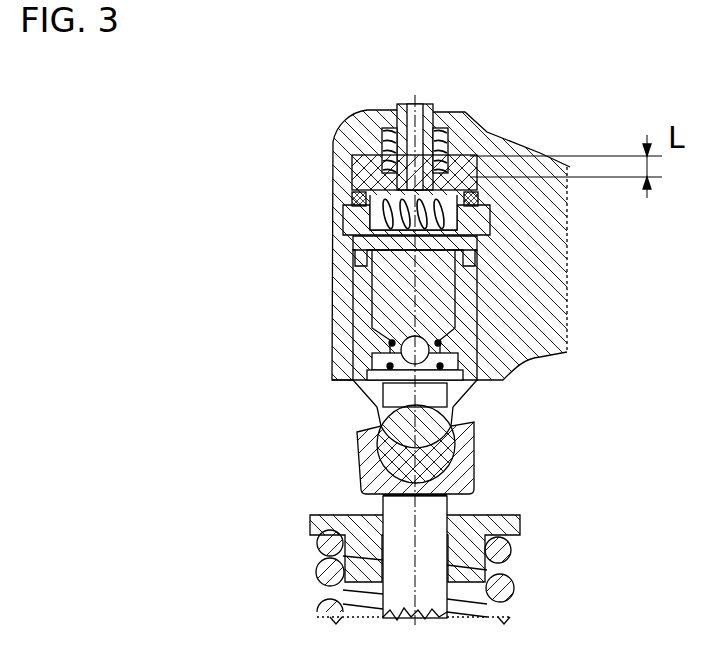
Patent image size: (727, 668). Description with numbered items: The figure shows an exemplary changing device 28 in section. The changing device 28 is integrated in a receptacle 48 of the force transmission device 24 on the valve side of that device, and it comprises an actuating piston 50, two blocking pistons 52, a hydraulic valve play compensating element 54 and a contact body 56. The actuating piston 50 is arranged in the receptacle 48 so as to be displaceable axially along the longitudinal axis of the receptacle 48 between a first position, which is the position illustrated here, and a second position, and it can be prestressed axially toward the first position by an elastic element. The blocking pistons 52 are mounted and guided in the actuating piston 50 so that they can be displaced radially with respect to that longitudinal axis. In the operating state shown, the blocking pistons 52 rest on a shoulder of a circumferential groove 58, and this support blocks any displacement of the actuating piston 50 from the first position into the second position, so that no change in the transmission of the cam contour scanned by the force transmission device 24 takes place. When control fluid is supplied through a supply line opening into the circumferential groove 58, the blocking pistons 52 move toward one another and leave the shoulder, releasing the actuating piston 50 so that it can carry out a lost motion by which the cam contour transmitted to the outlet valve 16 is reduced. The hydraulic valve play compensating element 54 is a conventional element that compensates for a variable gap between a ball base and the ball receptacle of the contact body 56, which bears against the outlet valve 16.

The outlet valve 16 is at (432, 510).
The force transmission device 24 is at (480, 138).
The changing device 28 is at (442, 45).
The receptacle 48 is at (352, 322).
The actuating piston 50 is at (345, 246).
The blocking pistons 52 is at (345, 202).
The hydraulic valve play compensating element 54 is at (330, 400).
The contact body 56 is at (480, 473).
The circumferential groove 58 is at (500, 227).